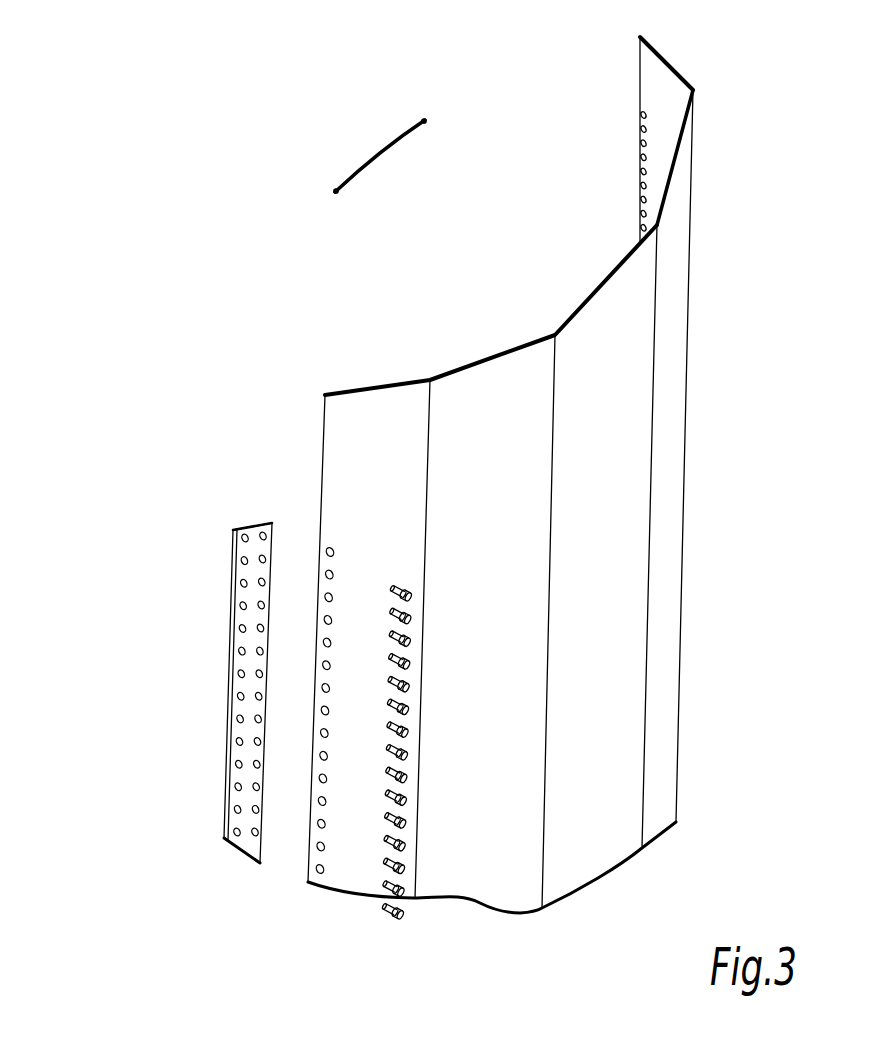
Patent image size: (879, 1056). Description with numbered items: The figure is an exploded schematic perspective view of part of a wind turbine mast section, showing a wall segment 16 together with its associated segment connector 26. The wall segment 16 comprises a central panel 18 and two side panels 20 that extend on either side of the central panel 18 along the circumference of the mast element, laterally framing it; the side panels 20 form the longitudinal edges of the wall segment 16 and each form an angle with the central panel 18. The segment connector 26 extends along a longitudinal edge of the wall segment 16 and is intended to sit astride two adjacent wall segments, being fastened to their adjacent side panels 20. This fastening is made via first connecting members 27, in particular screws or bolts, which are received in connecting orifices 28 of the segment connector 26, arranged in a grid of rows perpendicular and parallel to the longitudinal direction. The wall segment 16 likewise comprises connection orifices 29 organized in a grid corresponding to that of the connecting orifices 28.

The wall segment 16 is at (380, 156).
The central panel 18 is at (677, 193).
The side panel 20 is at (657, 77).
The segment connector 26 is at (218, 762).
The first connecting member 27 is at (405, 870).
The connecting orifice 28 is at (240, 679).
The connection orifice 29 is at (640, 133).